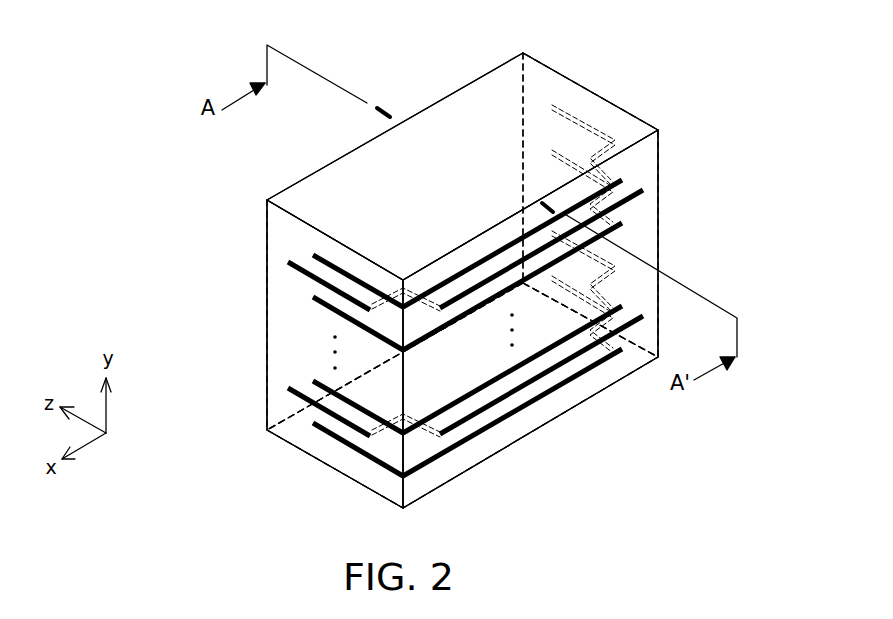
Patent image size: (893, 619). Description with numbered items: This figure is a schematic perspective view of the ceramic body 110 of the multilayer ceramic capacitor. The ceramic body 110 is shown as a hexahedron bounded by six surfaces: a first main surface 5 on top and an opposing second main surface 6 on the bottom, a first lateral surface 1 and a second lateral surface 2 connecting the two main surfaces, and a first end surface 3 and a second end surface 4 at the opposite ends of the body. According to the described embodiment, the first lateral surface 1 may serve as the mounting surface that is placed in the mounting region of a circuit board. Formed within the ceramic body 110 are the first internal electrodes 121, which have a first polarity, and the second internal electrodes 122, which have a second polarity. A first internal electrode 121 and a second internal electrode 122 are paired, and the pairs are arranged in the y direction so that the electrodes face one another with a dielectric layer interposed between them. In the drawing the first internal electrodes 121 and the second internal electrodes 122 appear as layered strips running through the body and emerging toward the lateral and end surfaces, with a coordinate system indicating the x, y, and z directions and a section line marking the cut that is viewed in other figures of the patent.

The first lateral surface 1 is at (573, 395).
The second lateral surface 2 is at (337, 205).
The first end surface 3 is at (274, 317).
The second end surface 4 is at (568, 117).
The first main surface 5 is at (435, 133).
The second main surface 6 is at (332, 450).
The ceramic body 110 is at (280, 250).
The first internal electrode 121 is at (283, 270).
The second internal electrode 122 is at (643, 191).